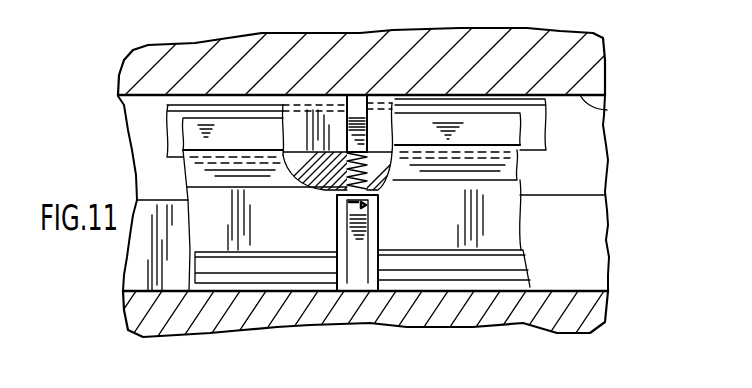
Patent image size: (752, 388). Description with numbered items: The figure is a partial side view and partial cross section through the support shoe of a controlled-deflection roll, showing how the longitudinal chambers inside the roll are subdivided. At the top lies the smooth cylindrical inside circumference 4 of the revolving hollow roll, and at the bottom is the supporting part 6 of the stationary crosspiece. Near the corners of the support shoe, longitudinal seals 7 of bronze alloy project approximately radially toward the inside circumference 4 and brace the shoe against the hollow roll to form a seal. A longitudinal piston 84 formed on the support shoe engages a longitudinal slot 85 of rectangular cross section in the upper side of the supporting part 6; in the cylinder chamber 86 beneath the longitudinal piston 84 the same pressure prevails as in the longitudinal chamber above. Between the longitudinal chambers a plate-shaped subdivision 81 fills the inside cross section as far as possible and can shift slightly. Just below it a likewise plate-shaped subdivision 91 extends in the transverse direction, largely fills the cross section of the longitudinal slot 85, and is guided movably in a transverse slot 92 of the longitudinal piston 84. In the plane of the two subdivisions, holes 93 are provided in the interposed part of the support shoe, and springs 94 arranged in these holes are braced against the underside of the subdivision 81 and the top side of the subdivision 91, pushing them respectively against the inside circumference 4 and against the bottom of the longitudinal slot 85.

The inside circumference 4 is at (606, 112).
The supporting part 6 is at (570, 312).
The longitudinal seals 7 is at (535, 132).
The subdivision 81 is at (356, 105).
The longitudinal piston 84 is at (503, 222).
The longitudinal slot 85 is at (593, 270).
The cylinder chamber 86 is at (298, 290).
The subdivision 91 is at (355, 258).
The transverse slot 92 is at (358, 247).
The holes 93 is at (380, 188).
The springs 94 is at (325, 189).